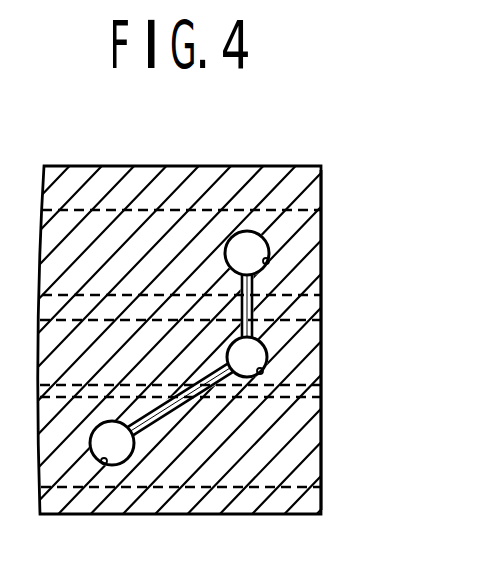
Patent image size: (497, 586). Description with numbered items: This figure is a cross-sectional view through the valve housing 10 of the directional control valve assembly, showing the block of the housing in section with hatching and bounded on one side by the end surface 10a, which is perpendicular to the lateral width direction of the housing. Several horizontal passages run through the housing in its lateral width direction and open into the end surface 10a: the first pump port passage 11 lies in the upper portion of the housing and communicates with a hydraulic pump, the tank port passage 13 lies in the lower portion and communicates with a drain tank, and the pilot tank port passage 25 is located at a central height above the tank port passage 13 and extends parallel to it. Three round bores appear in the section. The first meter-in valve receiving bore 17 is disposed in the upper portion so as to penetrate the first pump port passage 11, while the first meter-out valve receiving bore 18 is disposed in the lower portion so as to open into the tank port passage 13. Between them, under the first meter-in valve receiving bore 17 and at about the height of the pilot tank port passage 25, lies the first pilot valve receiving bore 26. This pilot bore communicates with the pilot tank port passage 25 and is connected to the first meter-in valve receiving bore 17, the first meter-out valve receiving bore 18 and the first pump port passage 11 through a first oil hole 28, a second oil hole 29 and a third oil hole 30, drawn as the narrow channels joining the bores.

The valve housing 10 is at (176, 166).
The end surface 10a is at (321, 287).
The first pump port passage 11 is at (321, 215).
The tank port passage 13 is at (321, 415).
The first meter-in valve receiving bore 17 is at (268, 262).
The first meter-out valve receiving bore 18 is at (104, 464).
The pilot tank port passage 25 is at (321, 340).
The first pilot valve receiving bore 26 is at (262, 369).
The first oil hole 28 is at (348, 306).
The third oil hole 30 is at (253, 315).
The second oil hole 29 is at (176, 405).